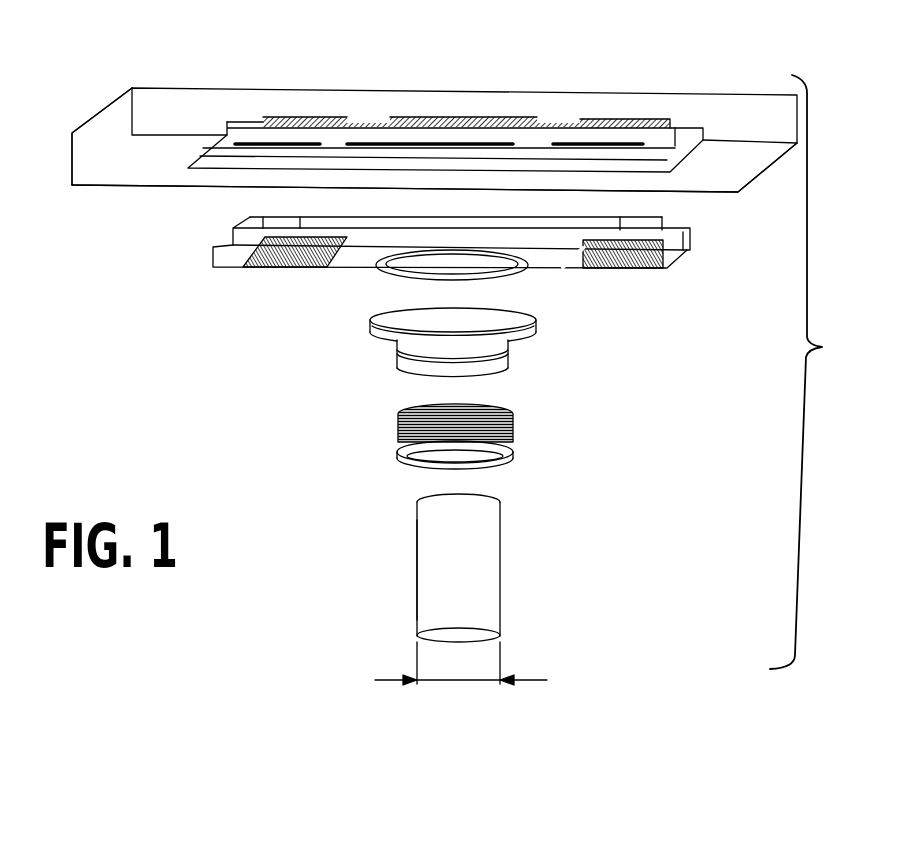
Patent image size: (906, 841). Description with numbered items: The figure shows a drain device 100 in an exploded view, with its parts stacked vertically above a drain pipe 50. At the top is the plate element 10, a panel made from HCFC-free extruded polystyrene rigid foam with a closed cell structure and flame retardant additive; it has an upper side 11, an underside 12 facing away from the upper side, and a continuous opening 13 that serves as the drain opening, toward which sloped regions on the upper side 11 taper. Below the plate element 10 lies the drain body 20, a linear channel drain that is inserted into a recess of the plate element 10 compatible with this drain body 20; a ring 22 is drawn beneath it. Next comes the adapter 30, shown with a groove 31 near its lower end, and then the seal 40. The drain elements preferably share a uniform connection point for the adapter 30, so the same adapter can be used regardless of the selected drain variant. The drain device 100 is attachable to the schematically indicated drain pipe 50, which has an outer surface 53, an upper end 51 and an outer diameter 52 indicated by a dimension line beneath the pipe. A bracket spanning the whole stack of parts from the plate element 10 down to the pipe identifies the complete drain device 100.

The plate element 10 is at (731, 110).
The upper side 11 is at (108, 99).
The underside 12 is at (162, 155).
The continuous opening 13 is at (528, 141).
The drain body 20 is at (688, 233).
The sealing ring 22 is at (474, 263).
The adapter 30 is at (388, 355).
The groove of bushing 31 is at (469, 368).
The seal 40 is at (388, 437).
The drain pipe 50 is at (501, 552).
The upper end 51 is at (494, 492).
The outer diameter 52 is at (461, 663).
The outer surface 53 is at (414, 552).
The drain device 100 is at (812, 372).